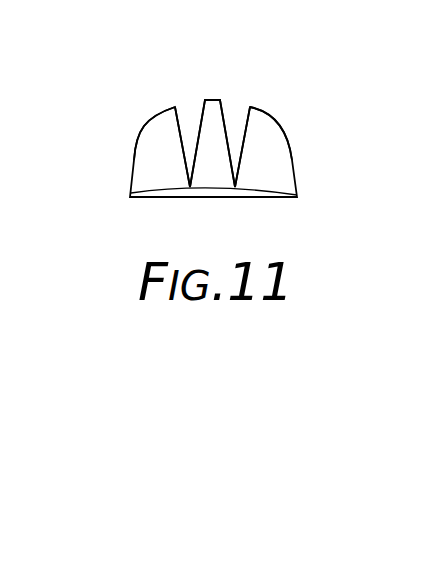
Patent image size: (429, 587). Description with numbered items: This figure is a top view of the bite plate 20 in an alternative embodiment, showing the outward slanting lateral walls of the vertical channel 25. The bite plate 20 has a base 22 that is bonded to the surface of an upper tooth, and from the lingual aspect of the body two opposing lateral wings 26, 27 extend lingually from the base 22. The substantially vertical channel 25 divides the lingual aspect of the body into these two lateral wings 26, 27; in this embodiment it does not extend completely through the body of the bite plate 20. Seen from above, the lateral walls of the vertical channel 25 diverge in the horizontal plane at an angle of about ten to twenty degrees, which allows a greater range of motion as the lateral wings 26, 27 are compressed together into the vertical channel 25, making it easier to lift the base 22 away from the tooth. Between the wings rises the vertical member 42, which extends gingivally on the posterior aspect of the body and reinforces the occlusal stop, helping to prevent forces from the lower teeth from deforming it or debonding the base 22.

The bite plate 20 is at (318, 145).
The base 22 is at (152, 200).
The vertical channel 25 is at (192, 117).
The lateral wing 26 is at (268, 128).
The lateral wing 27 is at (158, 135).
The vertical member 42 is at (210, 98).